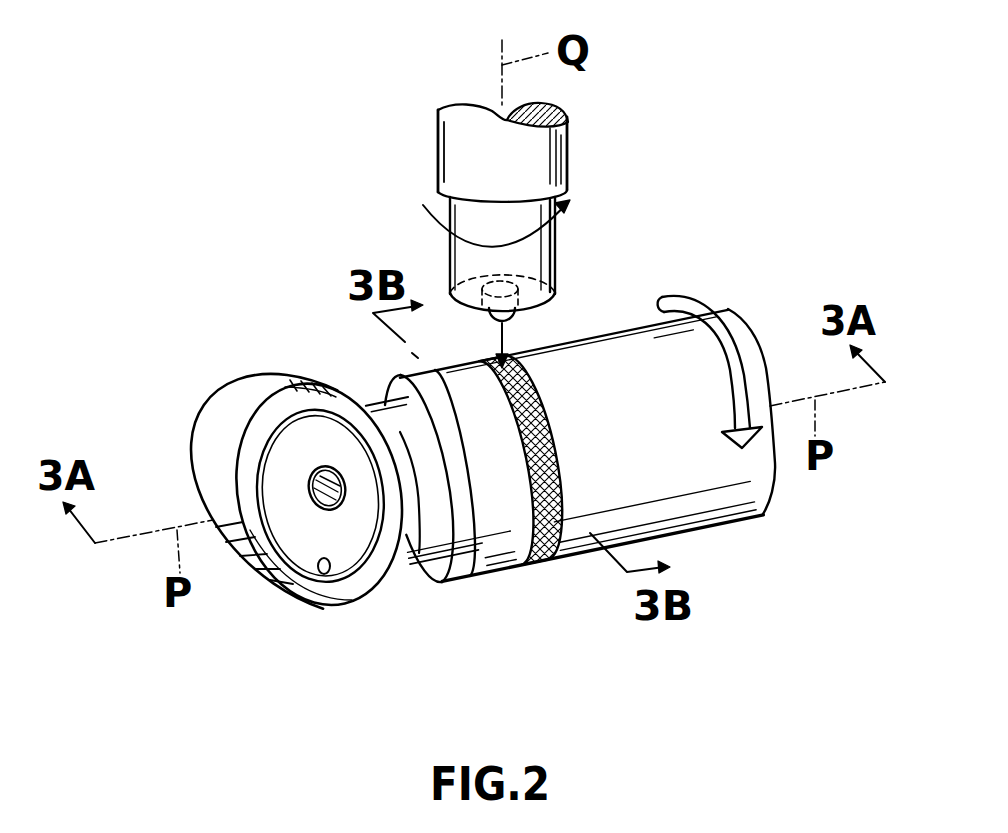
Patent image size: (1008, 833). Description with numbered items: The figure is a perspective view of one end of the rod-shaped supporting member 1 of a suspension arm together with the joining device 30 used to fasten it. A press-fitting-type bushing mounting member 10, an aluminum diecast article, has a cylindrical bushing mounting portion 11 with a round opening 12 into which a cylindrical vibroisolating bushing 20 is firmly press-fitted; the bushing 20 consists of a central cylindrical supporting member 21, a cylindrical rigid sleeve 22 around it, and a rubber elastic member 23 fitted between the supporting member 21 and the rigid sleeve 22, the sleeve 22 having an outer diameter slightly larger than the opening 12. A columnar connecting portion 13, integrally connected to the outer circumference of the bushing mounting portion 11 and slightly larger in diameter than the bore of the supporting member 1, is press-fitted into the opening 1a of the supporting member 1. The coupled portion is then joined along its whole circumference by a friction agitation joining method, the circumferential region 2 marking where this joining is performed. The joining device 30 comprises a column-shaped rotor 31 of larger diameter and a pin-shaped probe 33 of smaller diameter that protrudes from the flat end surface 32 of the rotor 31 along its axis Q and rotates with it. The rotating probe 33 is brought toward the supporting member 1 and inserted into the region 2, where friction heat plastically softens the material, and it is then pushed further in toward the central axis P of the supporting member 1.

The supporting member 1 is at (743, 514).
The opening 1a is at (470, 540).
The circumferential region 2 is at (567, 558).
The bushing mounting member 10 is at (290, 378).
The bushing mounting portion 11 is at (352, 588).
The opening 12 is at (325, 575).
The connecting portion 13 is at (430, 542).
The vibroisolating bushing 20 is at (293, 567).
The central cylindrical supporting member 21 is at (305, 487).
The rigid sleeve 22 is at (280, 432).
The rubber elastic member 23 is at (289, 467).
The joining device 30 is at (433, 133).
The rotor 31 is at (463, 251).
The tool end face 32 is at (553, 300).
The probe 33 is at (516, 323).